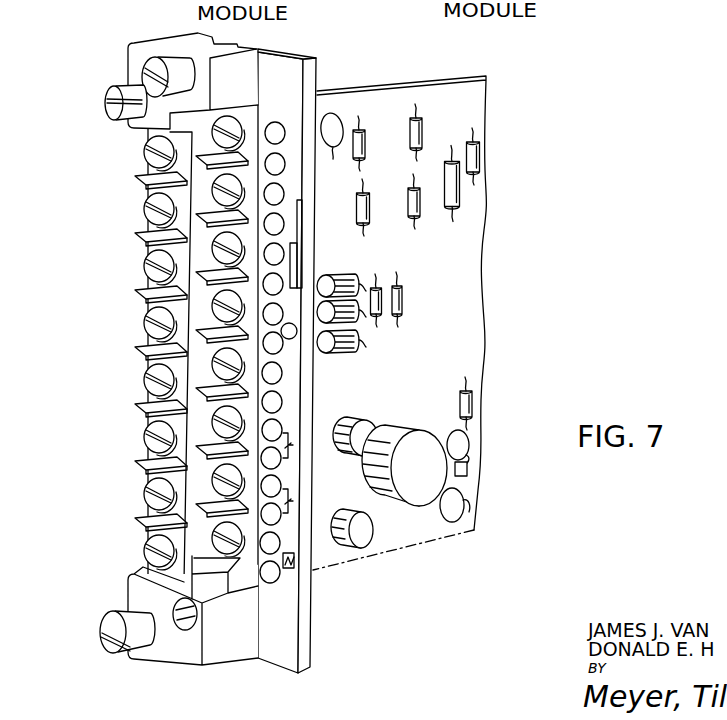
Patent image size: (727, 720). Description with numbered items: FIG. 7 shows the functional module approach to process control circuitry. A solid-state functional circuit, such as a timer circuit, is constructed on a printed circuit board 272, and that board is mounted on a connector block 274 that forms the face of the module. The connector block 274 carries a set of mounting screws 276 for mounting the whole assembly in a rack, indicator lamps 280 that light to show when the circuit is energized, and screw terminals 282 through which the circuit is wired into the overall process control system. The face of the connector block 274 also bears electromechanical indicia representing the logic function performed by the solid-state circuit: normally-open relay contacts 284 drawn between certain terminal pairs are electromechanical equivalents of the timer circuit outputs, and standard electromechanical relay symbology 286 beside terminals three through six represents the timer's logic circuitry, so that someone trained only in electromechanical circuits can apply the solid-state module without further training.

The printed circuit board 272 is at (386, 88).
The connector block 274 is at (340, 355).
The mounting screws 276 is at (164, 57).
The indicator lamps 280 is at (107, 95).
The screw terminals 282 is at (147, 270).
The normally-open relay contacts 284 is at (294, 572).
The electromechanical relay symbology 286 is at (301, 284).